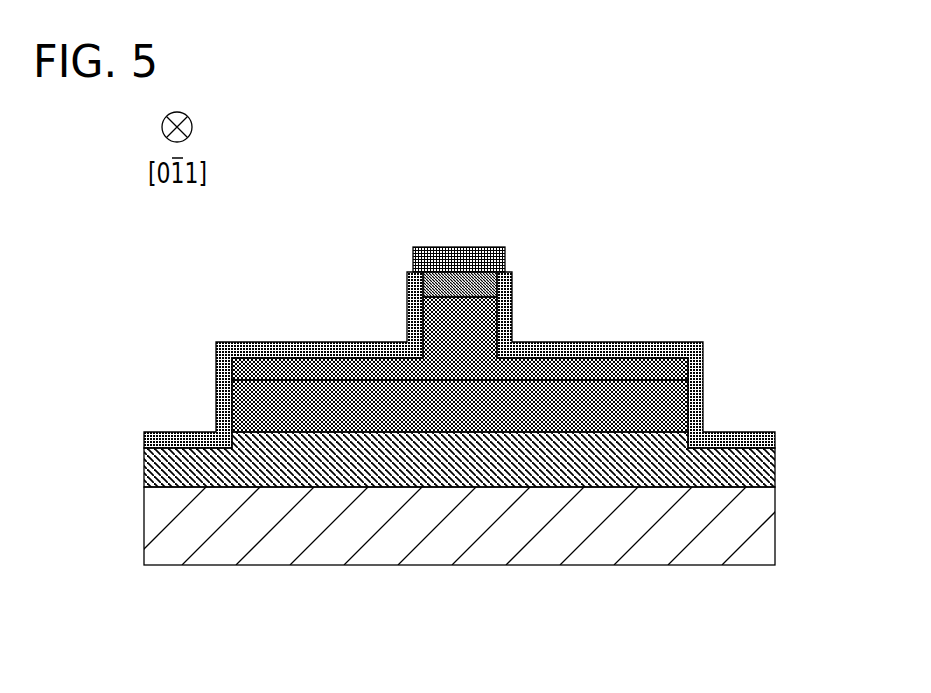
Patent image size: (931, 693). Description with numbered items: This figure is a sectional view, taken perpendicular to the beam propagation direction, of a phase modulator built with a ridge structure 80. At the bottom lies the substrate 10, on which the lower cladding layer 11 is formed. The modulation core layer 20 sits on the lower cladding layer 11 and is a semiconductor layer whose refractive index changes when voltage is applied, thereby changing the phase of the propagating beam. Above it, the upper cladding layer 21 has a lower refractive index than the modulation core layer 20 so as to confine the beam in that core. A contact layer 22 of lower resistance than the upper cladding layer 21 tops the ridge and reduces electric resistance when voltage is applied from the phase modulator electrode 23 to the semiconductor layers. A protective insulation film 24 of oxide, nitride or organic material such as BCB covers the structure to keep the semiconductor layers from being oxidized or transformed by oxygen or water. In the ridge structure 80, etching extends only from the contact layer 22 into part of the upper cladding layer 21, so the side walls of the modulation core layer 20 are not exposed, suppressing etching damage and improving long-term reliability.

The ridge structure 80 is at (471, 143).
The substrate 10 is at (262, 532).
The lower cladding layer 11 is at (143, 472).
The modulation core layer 20 is at (470, 403).
The upper cladding layer 21 is at (284, 370).
The contact layer 22 is at (407, 277).
The phase modulator electrode 23 is at (462, 253).
The protective insulation film 24 is at (194, 432).